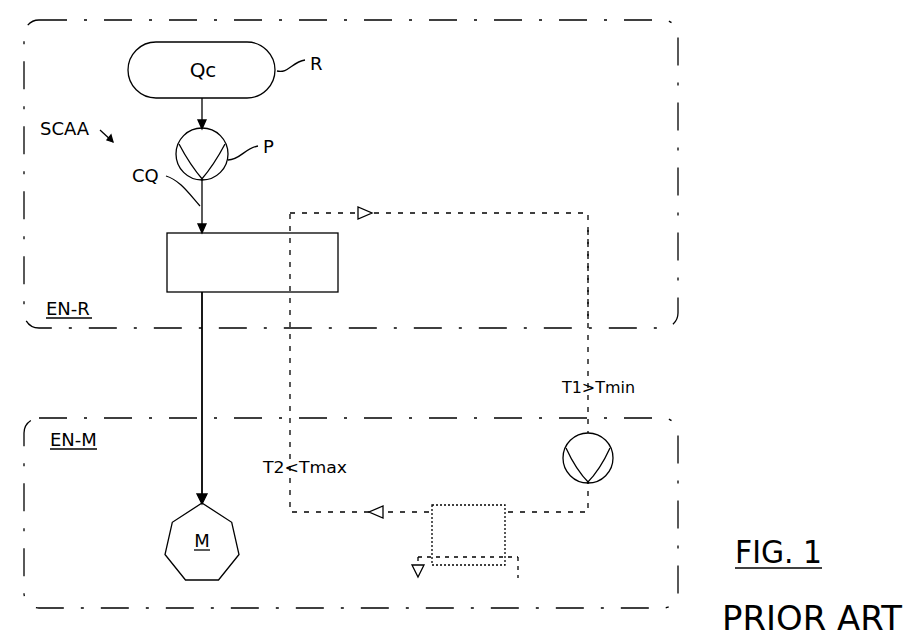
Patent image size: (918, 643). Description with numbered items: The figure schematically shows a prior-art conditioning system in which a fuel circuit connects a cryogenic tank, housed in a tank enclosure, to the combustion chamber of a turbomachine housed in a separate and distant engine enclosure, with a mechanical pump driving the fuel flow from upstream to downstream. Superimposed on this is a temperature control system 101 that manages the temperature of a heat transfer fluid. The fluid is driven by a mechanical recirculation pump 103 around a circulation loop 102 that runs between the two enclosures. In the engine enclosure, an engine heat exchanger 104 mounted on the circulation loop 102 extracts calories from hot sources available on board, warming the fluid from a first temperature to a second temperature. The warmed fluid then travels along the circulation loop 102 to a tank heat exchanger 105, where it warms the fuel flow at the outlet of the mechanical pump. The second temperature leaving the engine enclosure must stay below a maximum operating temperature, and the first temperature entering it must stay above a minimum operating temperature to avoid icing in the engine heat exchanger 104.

The temperature control system 101 is at (573, 188).
The circulation loop 102 is at (592, 298).
The mechanical recirculation pump 103 is at (612, 455).
The engine heat exchanger 104 is at (453, 544).
The tank heat exchanger 105 is at (238, 273).